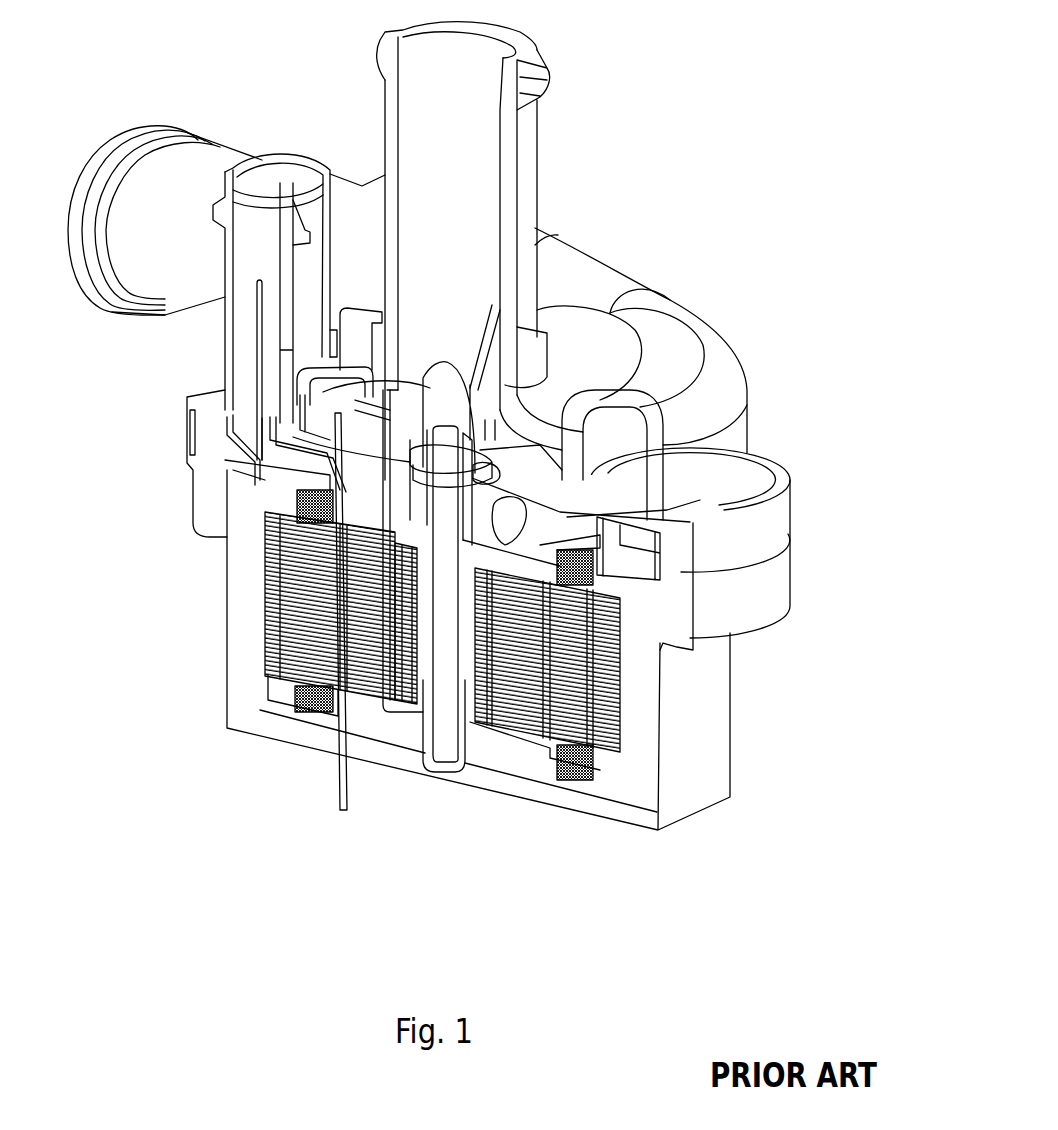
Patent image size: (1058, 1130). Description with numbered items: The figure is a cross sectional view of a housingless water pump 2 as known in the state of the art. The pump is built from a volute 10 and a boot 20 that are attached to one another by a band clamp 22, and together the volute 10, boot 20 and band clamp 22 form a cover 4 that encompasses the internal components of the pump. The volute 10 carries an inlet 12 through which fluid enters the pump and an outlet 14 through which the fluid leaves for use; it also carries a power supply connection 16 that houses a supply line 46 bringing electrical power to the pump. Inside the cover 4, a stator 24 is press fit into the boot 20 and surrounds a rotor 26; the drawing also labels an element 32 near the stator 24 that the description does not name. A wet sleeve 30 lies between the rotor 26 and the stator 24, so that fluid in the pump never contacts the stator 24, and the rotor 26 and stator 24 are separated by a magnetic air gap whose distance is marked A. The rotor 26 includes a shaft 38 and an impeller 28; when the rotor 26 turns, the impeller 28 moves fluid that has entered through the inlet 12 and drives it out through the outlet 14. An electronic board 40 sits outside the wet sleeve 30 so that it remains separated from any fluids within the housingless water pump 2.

The housingless water pump 2 is at (657, 157).
The cover 4 is at (748, 327).
The volute 10 is at (722, 390).
The inlet 12 is at (547, 72).
The outlet 14 is at (142, 148).
The power supply connection 16 is at (270, 177).
The boot 20 is at (695, 778).
The band clamp 22 is at (767, 520).
The stator 24 is at (293, 548).
The rotor 26 is at (372, 672).
The impeller 28 is at (500, 469).
The wet sleeve 30 is at (340, 625).
The coil 32 is at (620, 500).
The shaft 38 is at (452, 747).
The electronic board 40 is at (640, 547).
The supply line 46 is at (262, 305).
The distance of magnetic air gap A is at (340, 793).